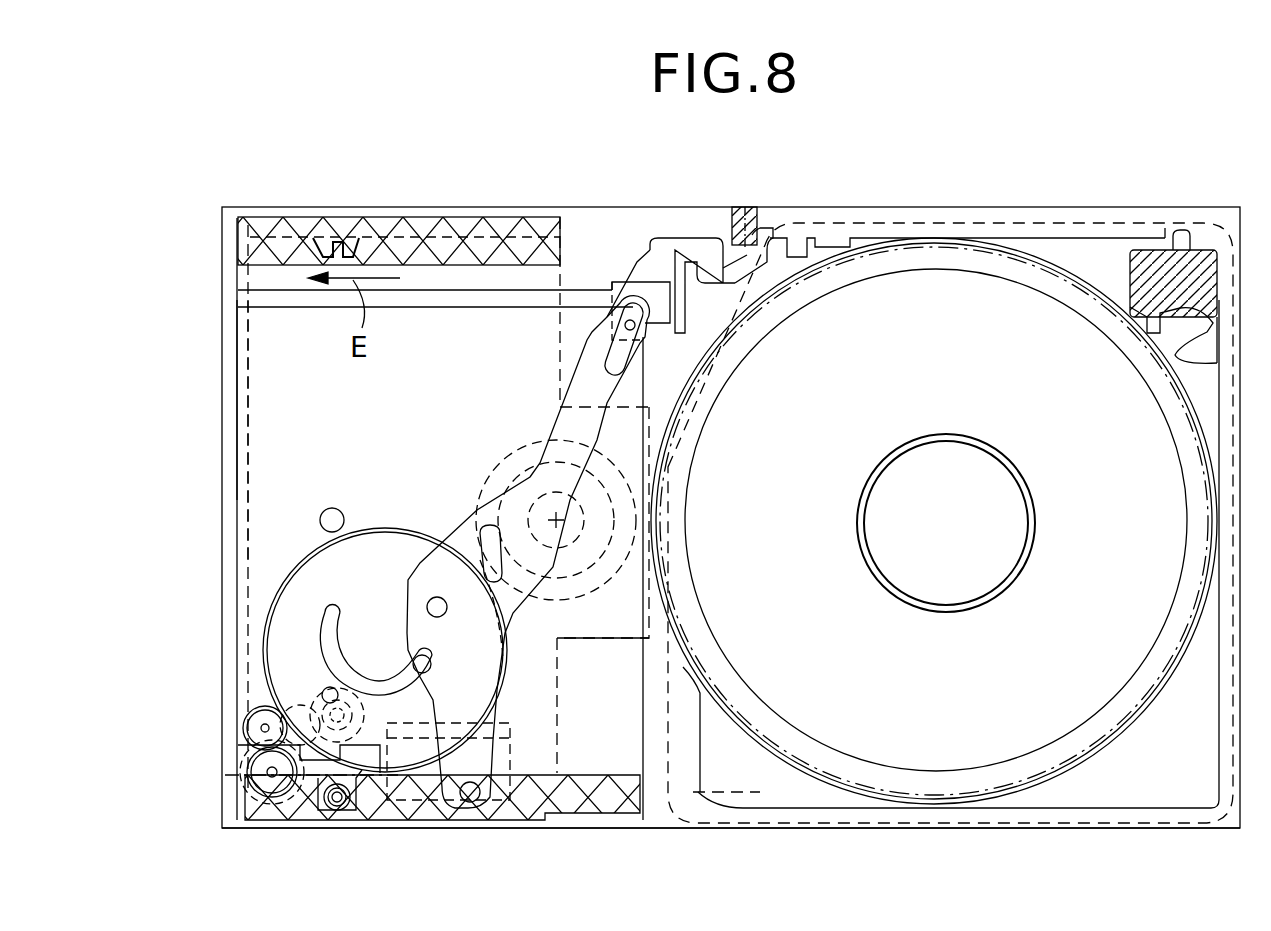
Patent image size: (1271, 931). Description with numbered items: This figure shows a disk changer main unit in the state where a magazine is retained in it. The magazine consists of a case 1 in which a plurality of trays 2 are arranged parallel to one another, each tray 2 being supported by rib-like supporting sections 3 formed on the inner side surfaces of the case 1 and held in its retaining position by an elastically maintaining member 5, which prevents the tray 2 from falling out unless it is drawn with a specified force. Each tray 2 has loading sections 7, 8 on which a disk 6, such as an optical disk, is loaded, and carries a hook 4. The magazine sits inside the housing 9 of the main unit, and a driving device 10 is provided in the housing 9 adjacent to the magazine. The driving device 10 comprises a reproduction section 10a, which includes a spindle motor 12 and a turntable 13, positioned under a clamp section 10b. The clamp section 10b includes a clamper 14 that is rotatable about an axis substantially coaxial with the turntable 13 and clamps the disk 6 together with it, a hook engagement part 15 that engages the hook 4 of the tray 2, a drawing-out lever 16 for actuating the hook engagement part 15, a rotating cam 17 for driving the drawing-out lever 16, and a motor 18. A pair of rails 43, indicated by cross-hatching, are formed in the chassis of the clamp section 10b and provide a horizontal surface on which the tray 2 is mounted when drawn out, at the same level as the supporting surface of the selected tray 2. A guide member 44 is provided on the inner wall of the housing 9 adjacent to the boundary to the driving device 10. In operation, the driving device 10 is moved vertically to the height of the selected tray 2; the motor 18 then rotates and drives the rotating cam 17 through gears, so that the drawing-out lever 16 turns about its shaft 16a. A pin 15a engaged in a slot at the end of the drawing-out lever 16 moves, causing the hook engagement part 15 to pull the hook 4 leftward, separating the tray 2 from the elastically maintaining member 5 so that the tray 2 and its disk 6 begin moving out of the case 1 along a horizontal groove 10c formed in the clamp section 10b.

The case 1 is at (668, 797).
The tray 2 is at (722, 750).
The supporting section 3 is at (828, 245).
The hook 4 is at (700, 265).
The elastically maintaining member 5 is at (1147, 275).
The disk 6 is at (690, 655).
The loading section 7 is at (965, 442).
The loading section 8 is at (1025, 270).
The housing 9 is at (721, 207).
The driving device 10 is at (140, 495).
The reproduction section 10a is at (237, 496).
The clamp section 10b is at (237, 535).
The horizontal groove 10c is at (490, 290).
The spindle motor 12 is at (590, 510).
The turntable 13 is at (620, 470).
The clamper 14 is at (640, 590).
The hook engagement part 15 is at (727, 268).
The pin 15a is at (628, 330).
The drawing-out lever 16 is at (558, 420).
The shaft 16a is at (468, 802).
The rotating cam 17 is at (277, 657).
The motor 18 is at (415, 790).
The rail 43 is at (415, 245).
The guide member 44 is at (745, 222).